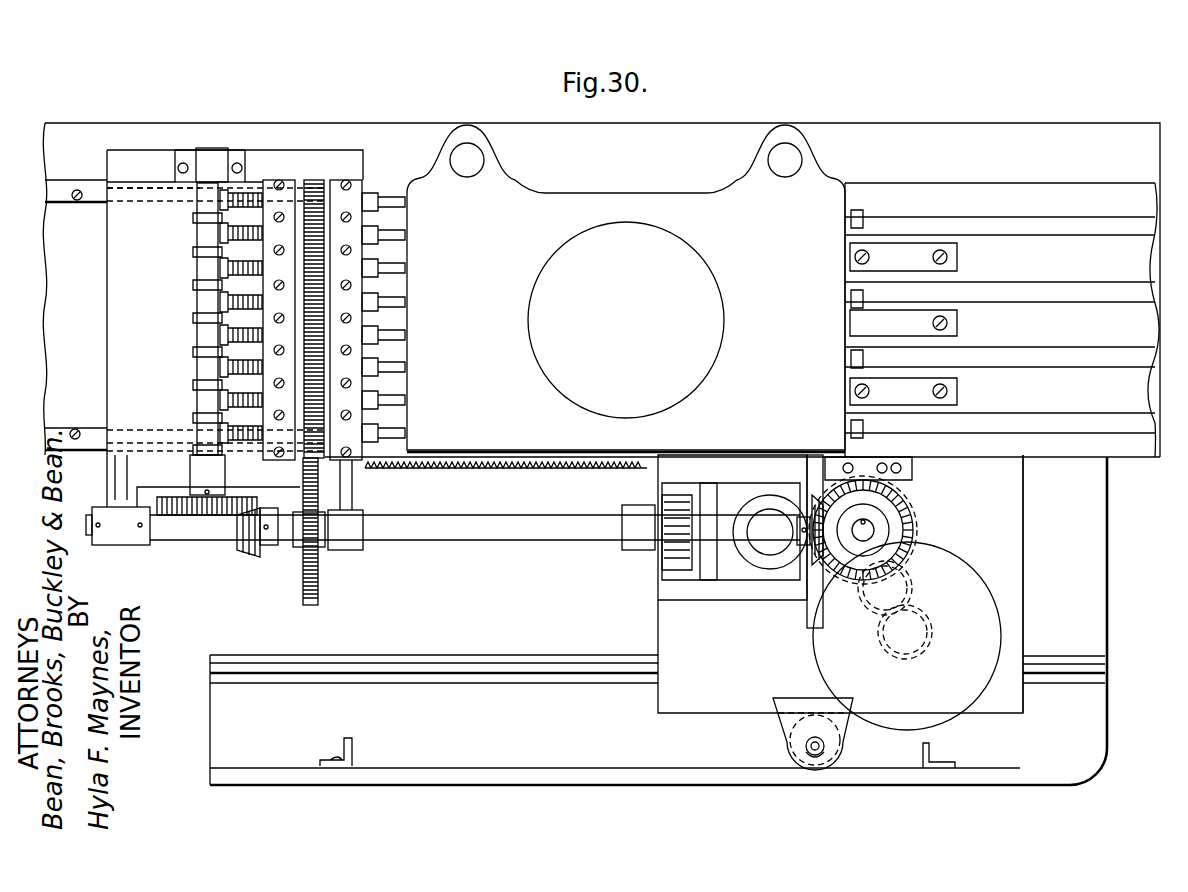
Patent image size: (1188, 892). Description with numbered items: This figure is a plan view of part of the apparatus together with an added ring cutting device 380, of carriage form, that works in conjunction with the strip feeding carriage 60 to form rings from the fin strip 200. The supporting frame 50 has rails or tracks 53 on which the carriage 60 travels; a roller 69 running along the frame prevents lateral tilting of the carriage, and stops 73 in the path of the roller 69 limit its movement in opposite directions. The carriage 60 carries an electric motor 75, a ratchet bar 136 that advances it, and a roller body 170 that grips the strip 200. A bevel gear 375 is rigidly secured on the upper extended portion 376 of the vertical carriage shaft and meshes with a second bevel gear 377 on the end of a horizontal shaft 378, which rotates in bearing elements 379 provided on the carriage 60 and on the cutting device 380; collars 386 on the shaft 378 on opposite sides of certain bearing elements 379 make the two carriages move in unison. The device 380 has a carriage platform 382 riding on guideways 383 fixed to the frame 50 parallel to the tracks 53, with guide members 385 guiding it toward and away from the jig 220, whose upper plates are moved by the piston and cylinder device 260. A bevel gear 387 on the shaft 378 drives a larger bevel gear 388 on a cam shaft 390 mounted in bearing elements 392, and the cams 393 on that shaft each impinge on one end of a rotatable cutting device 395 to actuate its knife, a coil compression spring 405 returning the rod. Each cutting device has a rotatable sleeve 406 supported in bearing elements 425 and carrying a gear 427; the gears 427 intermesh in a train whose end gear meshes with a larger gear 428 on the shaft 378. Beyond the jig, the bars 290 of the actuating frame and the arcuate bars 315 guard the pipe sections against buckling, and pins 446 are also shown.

The ring cutting device 380 is at (141, 140).
The carriage platform 382 is at (110, 318).
The guideways 383 is at (78, 159).
The guide members 385 is at (135, 190).
The bearing elements 392 is at (222, 160).
The rotatable cutting device 395 is at (283, 188).
The gear 427 is at (338, 225).
The cam shaft 390 is at (198, 347).
The cams 393 is at (198, 400).
The rotatable sleeve 406 is at (262, 283).
The bearing elements 425 is at (262, 262).
The coil compression spring 405 is at (262, 428).
The bevel gear 388 is at (212, 566).
The collars 386 is at (120, 545).
The bevel gear 387 is at (250, 556).
The horizontal shaft 378 is at (490, 541).
The bearing elements 379 is at (120, 547).
The gear 428 is at (312, 606).
The ratchet bar 136 is at (506, 483).
The jig 220 is at (629, 184).
The piston and cylinder device 260 is at (705, 320).
The pins 446 is at (405, 288).
The bars 290 is at (1003, 186).
The arcuate bars 315 is at (965, 300).
The roller body 170 is at (754, 575).
The bevel gear 375 is at (905, 503).
The upper extended portion 376 is at (870, 530).
The electric motor 75 is at (1000, 615).
The carriage 60 is at (1023, 630).
The second bevel gear 377 is at (848, 552).
The strip of material 200 is at (812, 690).
The roller 69 is at (800, 760).
The supporting frame 50 is at (208, 699).
The rails or tracks 53 is at (440, 665).
The stops 73 is at (352, 770).